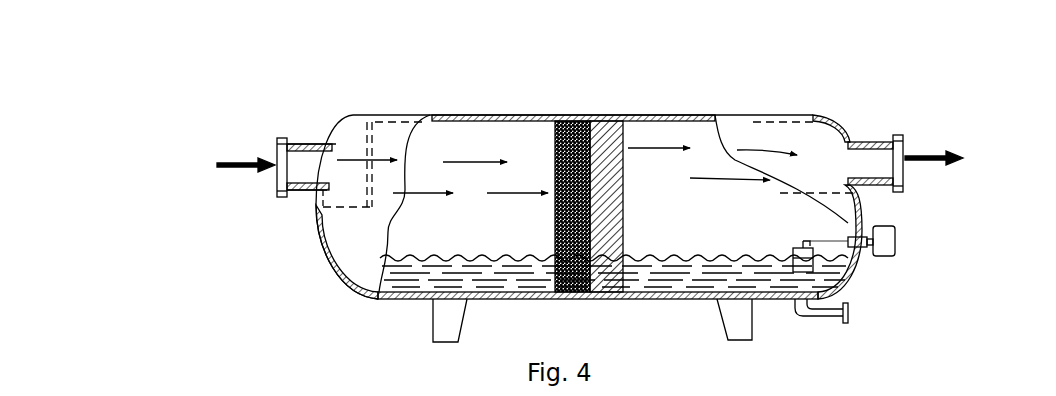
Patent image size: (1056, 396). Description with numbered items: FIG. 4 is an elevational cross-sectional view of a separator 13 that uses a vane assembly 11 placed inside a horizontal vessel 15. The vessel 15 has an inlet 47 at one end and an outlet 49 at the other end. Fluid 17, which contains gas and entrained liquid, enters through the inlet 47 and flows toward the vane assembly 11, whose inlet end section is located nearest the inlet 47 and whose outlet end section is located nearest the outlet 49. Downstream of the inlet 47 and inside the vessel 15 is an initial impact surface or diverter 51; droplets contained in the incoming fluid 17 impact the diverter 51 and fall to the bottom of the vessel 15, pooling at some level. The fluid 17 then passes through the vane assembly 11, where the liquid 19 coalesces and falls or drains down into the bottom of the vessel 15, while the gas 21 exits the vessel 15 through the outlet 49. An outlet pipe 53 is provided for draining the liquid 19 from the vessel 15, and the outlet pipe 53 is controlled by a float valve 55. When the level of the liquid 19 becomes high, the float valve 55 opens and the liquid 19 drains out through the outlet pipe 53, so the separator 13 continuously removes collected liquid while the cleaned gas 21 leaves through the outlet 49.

The vane assembly 11 is at (620, 98).
The separator 13 is at (763, 89).
The vessel 15 is at (520, 115).
The fluid 17 is at (220, 166).
The liquid 19 is at (407, 283).
The gas 21 is at (942, 153).
The inlet 47 is at (290, 137).
The outlet 49 is at (897, 135).
The diverter 51 is at (355, 125).
The outlet pipe 53 is at (818, 322).
The float valve 55 is at (805, 238).